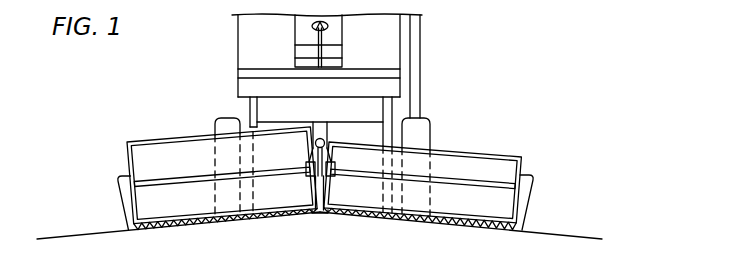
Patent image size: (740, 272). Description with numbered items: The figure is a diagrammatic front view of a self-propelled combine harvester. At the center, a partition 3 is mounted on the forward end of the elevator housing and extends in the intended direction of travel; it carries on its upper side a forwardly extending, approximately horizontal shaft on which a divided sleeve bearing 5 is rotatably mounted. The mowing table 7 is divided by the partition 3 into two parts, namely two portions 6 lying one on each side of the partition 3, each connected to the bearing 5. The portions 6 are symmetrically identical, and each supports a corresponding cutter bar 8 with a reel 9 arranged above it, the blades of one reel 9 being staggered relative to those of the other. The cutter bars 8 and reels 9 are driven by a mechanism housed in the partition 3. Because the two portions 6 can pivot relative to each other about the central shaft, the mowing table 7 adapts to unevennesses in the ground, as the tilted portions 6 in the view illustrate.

The partition 3 is at (324, 185).
The divided sleeve bearing 5 is at (315, 143).
The portions of the mowing table 6 is at (341, 218).
The mowing table 7 is at (523, 156).
The cutter bar 8 is at (165, 231).
The reel 9 is at (340, 168).